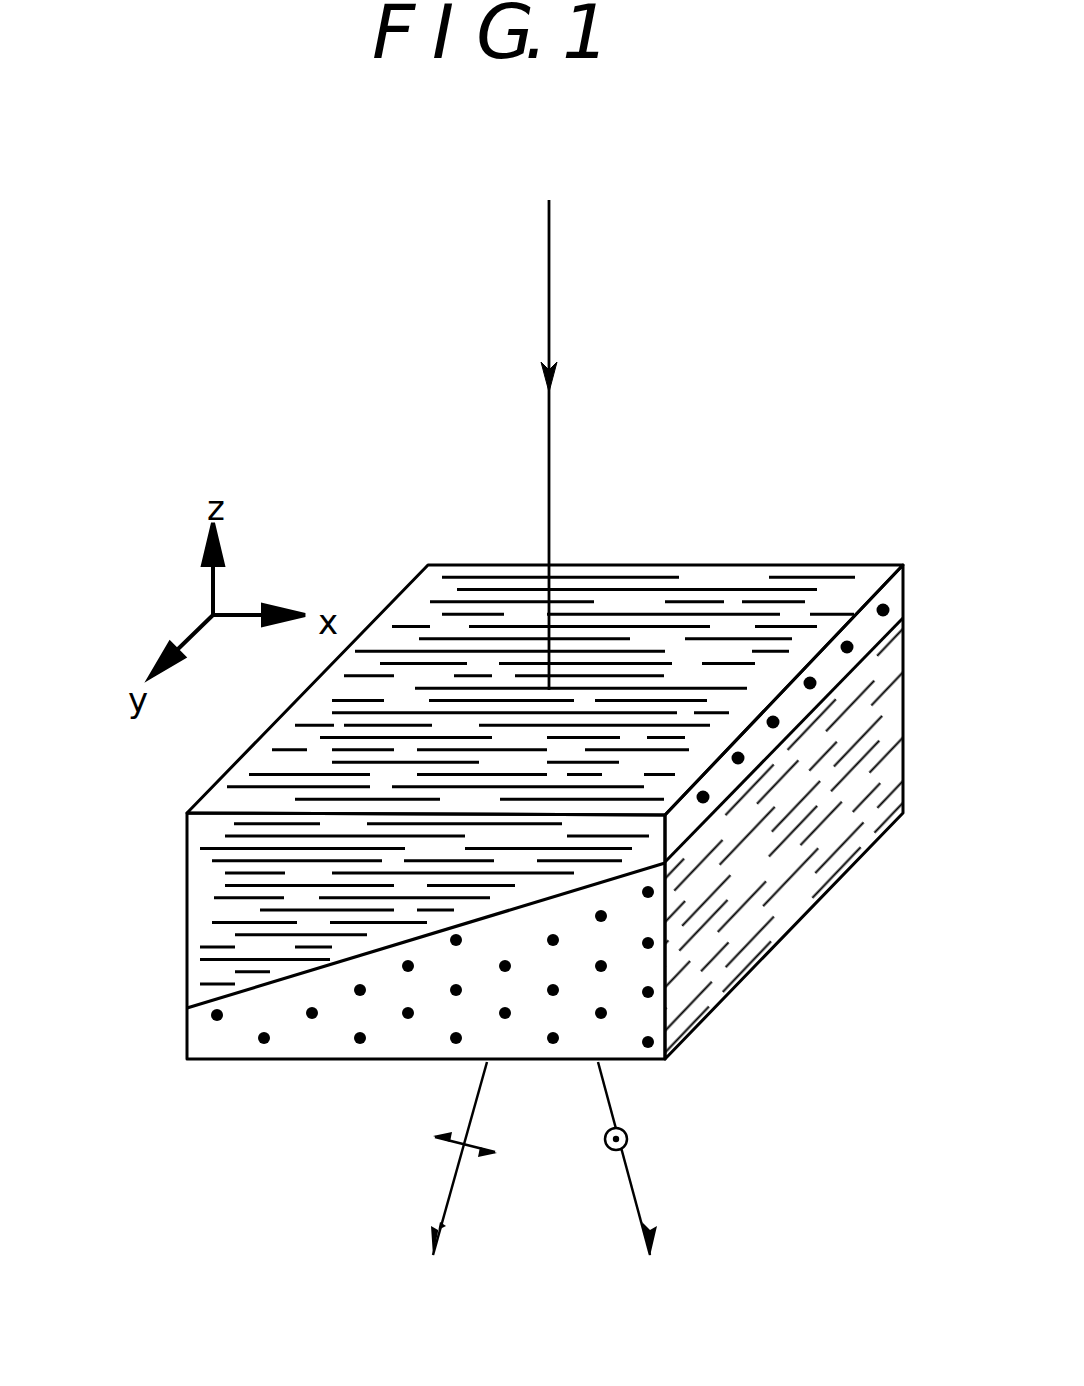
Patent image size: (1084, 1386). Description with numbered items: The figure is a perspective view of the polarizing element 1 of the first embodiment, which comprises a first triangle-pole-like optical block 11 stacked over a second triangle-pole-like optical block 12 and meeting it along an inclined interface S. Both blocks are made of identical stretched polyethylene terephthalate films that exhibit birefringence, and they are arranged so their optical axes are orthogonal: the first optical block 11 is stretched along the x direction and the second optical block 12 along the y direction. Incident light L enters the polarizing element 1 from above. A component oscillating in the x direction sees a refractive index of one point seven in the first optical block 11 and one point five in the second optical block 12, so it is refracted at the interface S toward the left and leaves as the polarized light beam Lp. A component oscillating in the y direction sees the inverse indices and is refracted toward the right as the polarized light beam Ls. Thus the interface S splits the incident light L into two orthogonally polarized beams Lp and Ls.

The polarizing element 1 is at (498, 766).
The first triangle-pole-like optical block 11 is at (195, 893).
The second triangle-pole-like optical block 12 is at (197, 1045).
The interface S is at (210, 1000).
The incident light L is at (549, 282).
The polarized light beam Lp is at (450, 1197).
The polarized light beam Ls is at (632, 1203).